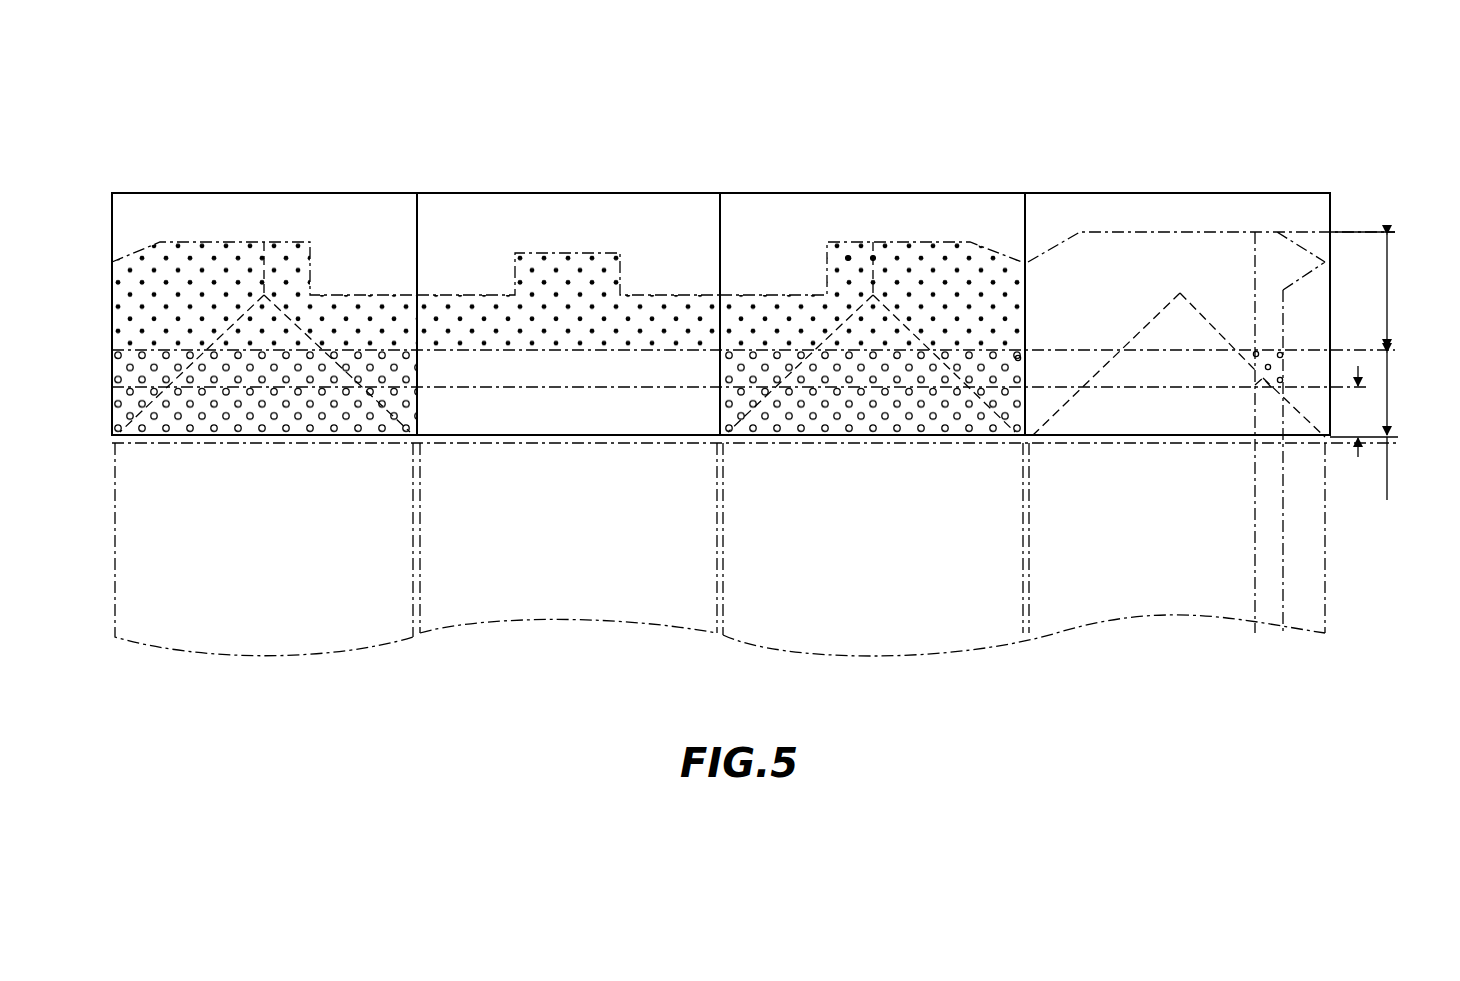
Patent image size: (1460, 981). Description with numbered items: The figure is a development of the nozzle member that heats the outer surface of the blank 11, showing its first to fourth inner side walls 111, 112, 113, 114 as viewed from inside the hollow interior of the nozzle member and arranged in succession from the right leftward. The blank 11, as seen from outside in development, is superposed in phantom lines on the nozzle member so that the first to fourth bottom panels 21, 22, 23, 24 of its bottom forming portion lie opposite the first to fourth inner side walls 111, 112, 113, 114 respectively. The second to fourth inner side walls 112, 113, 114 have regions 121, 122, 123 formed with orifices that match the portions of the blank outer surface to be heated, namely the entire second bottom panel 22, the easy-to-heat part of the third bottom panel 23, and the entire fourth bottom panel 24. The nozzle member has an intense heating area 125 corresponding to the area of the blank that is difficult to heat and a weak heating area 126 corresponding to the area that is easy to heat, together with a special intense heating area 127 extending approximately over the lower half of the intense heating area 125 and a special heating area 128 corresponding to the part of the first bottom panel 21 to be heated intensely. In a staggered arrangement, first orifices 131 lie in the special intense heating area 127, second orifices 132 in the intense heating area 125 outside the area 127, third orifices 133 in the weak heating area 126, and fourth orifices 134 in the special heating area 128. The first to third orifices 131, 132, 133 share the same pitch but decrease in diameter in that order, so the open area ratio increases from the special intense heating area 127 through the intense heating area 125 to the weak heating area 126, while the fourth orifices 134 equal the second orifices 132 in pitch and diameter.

The blank 11 is at (888, 662).
The first bottom panel 21 is at (1128, 443).
The second bottom panel 22 is at (828, 443).
The third bottom panel 23 is at (530, 443).
The fourth bottom panel 24 is at (233, 443).
The first inner side wall 111 is at (1177, 191).
The second inner side wall 112 is at (878, 191).
The third inner side wall 113 is at (518, 191).
The fourth inner side wall 114 is at (198, 191).
The region formed with orifices 121 is at (940, 242).
The region formed with orifices 122 is at (301, 242).
The region formed with orifices 123 is at (619, 253).
The intense heating area 125 is at (1387, 428).
The weak heating area 126 is at (778, 291).
The special intense heating area 127 is at (749, 411).
The special heating area 128 is at (1263, 378).
The first orifices 131 is at (970, 432).
The second orifices 132 is at (1018, 358).
The third orifices 133 is at (873, 257).
The fourth orifices 134 is at (1268, 342).